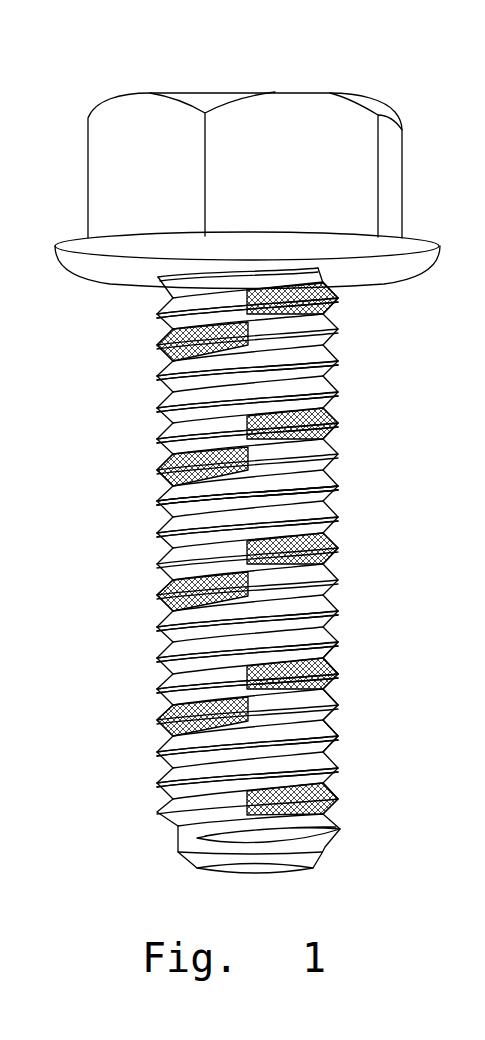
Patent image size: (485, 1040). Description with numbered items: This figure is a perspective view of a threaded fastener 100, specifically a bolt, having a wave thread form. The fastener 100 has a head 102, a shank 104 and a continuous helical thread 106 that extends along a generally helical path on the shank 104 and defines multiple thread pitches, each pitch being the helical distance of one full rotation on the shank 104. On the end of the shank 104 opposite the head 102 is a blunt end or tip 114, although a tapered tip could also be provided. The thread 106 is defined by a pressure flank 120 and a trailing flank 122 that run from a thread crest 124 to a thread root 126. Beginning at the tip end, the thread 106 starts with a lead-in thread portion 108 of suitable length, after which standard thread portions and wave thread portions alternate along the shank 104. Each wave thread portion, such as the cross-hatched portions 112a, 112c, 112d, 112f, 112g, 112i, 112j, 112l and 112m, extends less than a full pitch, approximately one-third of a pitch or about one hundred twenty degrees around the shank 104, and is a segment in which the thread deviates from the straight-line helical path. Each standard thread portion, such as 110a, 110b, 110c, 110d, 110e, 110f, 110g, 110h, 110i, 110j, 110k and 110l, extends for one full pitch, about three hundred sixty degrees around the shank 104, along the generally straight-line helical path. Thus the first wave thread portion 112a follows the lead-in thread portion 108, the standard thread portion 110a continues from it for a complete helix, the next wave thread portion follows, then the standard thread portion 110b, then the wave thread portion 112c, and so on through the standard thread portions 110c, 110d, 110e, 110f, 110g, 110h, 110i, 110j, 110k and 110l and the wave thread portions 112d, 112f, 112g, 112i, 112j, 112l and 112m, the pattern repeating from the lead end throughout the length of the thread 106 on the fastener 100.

The threaded fastener 100 is at (96, 80).
The head 102 is at (306, 105).
The shank 104 is at (239, 867).
The helical thread 106 is at (358, 783).
The lead-in thread portion 108 is at (265, 837).
The standard thread portion 110a is at (173, 785).
The standard thread portion 110b is at (173, 757).
The standard thread portion 110c is at (170, 682).
The standard thread portion 110d is at (170, 648).
The standard thread portion 110e is at (330, 600).
The standard thread portion 110f is at (165, 545).
The standard thread portion 110g is at (160, 510).
The standard thread portion 110h is at (328, 481).
The standard thread portion 110i is at (170, 440).
The standard thread portion 110j is at (165, 405).
The standard thread portion 110k is at (160, 372).
The standard thread portion 110l is at (158, 311).
The wave thread portion 112a is at (328, 808).
The wave thread portion 112c is at (165, 718).
The wave thread portion 112d is at (333, 672).
The wave thread portion 112f is at (160, 590).
The wave thread portion 112g is at (338, 546).
The wave thread portion 112i is at (160, 478).
The wave thread portion 112j is at (338, 422).
The wave thread portion 112l is at (158, 343).
The wave thread portion 112m is at (340, 300).
The blunt end or tip 114 is at (237, 870).
The pressure flank 120 is at (327, 750).
The trailing flank 122 is at (327, 712).
The thread crest 124 is at (327, 705).
The thread root 126 is at (327, 660).